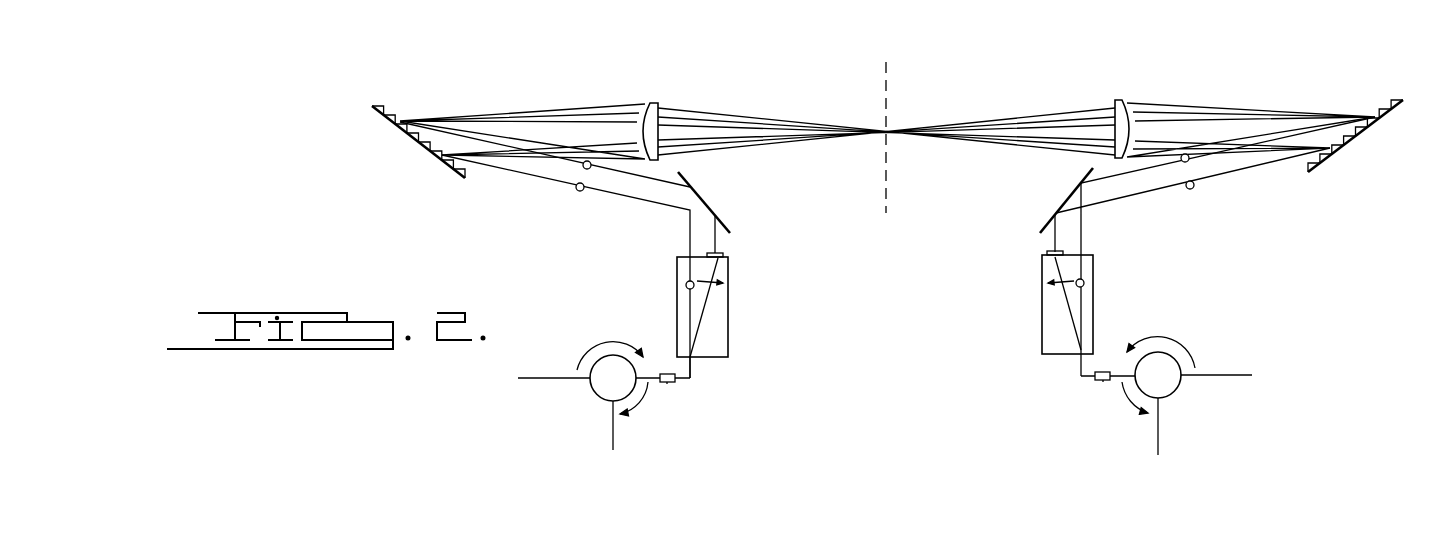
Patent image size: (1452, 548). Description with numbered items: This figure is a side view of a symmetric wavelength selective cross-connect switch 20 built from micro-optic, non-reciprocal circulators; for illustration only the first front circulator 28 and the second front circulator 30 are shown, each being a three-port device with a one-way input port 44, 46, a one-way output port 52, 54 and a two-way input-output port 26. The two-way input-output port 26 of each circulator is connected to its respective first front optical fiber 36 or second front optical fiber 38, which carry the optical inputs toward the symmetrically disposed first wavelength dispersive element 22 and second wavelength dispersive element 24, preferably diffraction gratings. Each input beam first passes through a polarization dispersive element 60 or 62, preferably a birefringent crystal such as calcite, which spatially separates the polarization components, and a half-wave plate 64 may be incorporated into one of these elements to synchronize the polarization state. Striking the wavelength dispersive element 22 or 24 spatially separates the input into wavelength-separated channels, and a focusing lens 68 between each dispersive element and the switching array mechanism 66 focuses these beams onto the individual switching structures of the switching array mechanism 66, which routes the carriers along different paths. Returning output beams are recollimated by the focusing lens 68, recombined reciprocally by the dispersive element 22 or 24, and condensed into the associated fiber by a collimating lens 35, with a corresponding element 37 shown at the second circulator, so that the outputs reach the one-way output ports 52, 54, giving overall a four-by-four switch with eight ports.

The symmetric wavelength selective cross-connect (WSXC) switch 20 is at (1064, 80).
The first wavelength dispersive element 22 is at (412, 140).
The second wavelength dispersive element 24 is at (1355, 137).
The two-way input-output port 26 is at (657, 374).
The first front circulator 28 is at (605, 364).
The second front circulator 30 is at (1173, 393).
The collimating lens 35 is at (671, 382).
The first front optical fiber 36 is at (692, 379).
The second fiber lead 37 is at (1103, 382).
The second front optical fiber 38 is at (1078, 373).
The one-way input port 44 is at (522, 380).
The one-way input port 46 is at (1240, 374).
The one-way output port 52 is at (612, 442).
The one-way output port 54 is at (1158, 440).
The polarization dispersive element 60 is at (728, 300).
The polarization dispersive element 62 is at (1042, 305).
The half-wave plate 64 is at (728, 250).
The switching array mechanism 66 is at (890, 97).
The focusing lens 68 is at (650, 112).